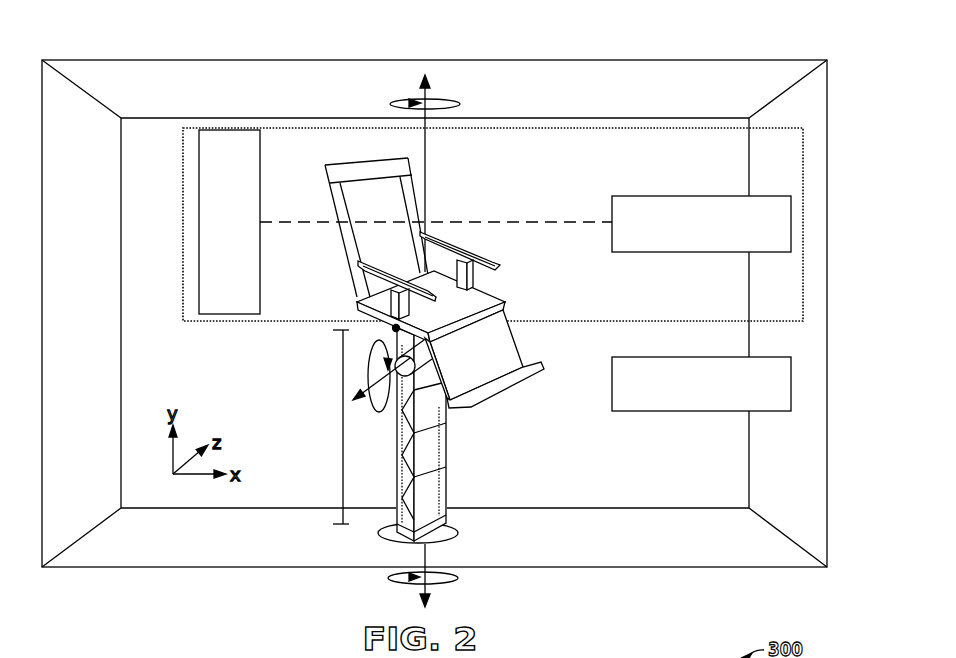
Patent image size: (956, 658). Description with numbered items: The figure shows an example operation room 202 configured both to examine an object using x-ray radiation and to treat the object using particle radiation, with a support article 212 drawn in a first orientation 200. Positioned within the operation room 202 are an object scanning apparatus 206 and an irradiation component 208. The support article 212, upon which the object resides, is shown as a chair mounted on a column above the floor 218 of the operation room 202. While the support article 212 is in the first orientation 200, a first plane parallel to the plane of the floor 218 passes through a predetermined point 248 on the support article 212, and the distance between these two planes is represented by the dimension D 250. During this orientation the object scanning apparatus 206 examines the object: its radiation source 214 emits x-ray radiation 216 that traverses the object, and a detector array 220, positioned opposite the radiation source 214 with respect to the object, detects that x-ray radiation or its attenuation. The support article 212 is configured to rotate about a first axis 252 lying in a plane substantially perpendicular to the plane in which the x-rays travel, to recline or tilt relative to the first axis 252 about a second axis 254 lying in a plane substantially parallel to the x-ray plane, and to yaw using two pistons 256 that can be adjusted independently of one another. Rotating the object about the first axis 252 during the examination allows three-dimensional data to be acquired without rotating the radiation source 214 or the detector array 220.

The first orientation 200 is at (757, 33).
The operation room 202 is at (137, 58).
The object scanning apparatus 206 is at (350, 128).
The irradiation component 208 is at (693, 357).
The support article 212 is at (342, 162).
The radiation source 214 is at (693, 196).
The x-ray radiation 216 is at (457, 222).
The floor 218 is at (258, 542).
The detector array 220 is at (198, 215).
The predetermined point 248 is at (396, 328).
The distance D 250 is at (312, 414).
The first axis 252 is at (432, 85).
The second axis 254 is at (350, 395).
The pistons 256 is at (397, 427).